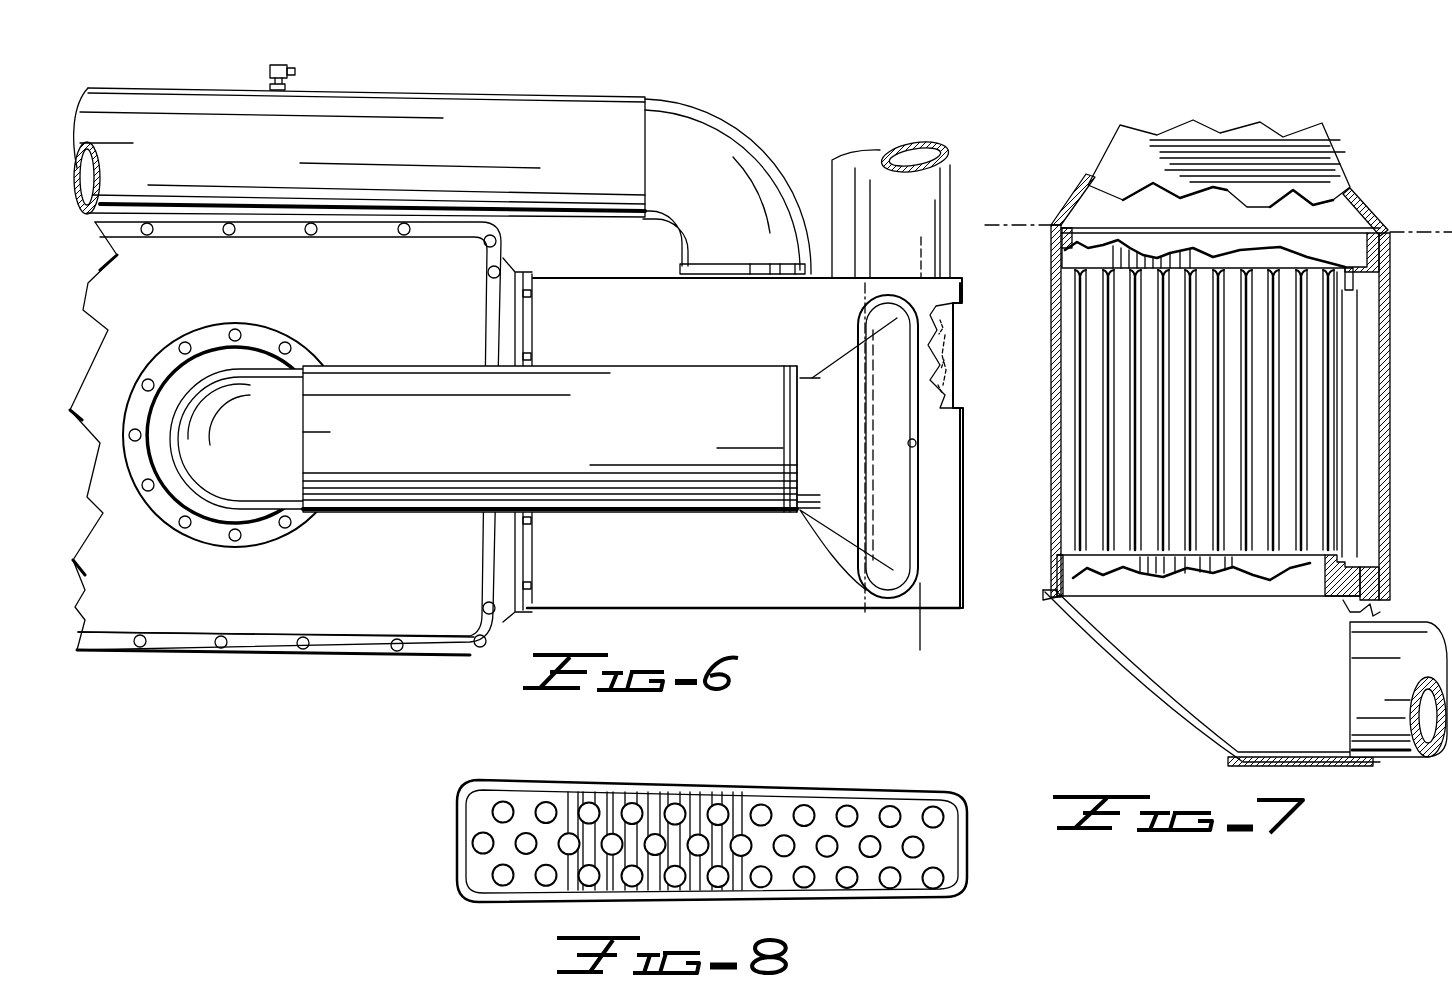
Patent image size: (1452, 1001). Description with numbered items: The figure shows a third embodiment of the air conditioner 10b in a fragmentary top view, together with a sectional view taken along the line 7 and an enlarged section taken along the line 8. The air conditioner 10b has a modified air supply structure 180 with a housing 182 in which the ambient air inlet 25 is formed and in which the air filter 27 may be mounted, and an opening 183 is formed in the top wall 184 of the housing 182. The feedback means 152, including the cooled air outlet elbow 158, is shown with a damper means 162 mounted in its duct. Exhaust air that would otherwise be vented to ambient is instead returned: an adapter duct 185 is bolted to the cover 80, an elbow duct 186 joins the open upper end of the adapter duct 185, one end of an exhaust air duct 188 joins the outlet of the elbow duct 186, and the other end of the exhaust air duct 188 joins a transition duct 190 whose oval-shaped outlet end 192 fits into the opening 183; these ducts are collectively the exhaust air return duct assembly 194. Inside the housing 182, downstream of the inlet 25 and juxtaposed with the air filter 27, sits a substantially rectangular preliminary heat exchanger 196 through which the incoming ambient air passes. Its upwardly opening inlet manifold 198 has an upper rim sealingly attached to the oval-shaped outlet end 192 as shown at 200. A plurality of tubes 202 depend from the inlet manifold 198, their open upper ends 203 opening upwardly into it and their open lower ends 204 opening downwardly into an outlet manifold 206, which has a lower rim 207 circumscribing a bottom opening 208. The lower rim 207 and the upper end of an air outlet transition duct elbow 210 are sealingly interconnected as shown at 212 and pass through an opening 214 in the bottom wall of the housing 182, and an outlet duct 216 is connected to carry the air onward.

In FIG. 6, the air conditioner 10b is at (348, 656).
In FIG. 6, the cover 80 is at (250, 625).
In FIG. 6, the feedback means 152 is at (611, 98).
In FIG. 6, the damper means 162 is at (296, 86).
In FIG. 6, the cooled air outlet elbow 158 is at (757, 142).
In FIG. 6, the outlet duct 216 is at (862, 157).
In FIG. 7, the outlet duct 216 is at (1378, 766).
In FIG. 6, the top wall 184 is at (615, 277).
In FIG. 6, the adapter duct 185 is at (270, 357).
In FIG. 6, the elbow duct 186 is at (267, 500).
In FIG. 6, the exhaust air duct 188 is at (656, 378).
In FIG. 6, the exhaust air return duct assembly 194 is at (770, 364).
In FIG. 6, the transition duct 190 is at (822, 530).
In FIG. 7, the transition duct 190 is at (1098, 165).
In FIG. 6, the oval-shaped outlet end 192 is at (918, 492).
In FIG. 7, the oval-shaped outlet end 192 is at (1370, 205).
In FIG. 6, the opening 183 is at (916, 442).
In FIG. 7, the opening 183 is at (1052, 222).
In FIG. 6, the housing 182 is at (713, 593).
In FIG. 7, the housing 182 is at (1045, 560).
In FIG. 6, the air supply structure 180 is at (866, 609).
In FIG. 6, the ambient air inlet 25 is at (955, 333).
In FIG. 6, the air filter 27 is at (955, 362).
In FIG. 6, the section line 7— 7 is at (922, 265).
In FIG. 7, the section line 8— 8 is at (1427, 231).
In FIG. 7, the sealing attachment 200 is at (1390, 234).
In FIG. 7, the inlet manifold 198 is at (1073, 258).
In FIG. 8, the inlet manifold 198 is at (862, 781).
In FIG. 7, the open upper ends 203 is at (1349, 268).
In FIG. 8, the open upper ends 203 is at (805, 805).
In FIG. 7, the tubes 202 is at (1320, 428).
In FIG. 7, the preliminary heat exchanger 196 is at (1360, 371).
In FIG. 7, the outlet manifold 206 is at (1228, 585).
In FIG. 7, the bottom opening 208 is at (1118, 585).
In FIG. 7, the open lower ends 204 is at (1335, 587).
In FIG. 7, the opening 214 is at (1380, 612).
In FIG. 7, the sealing interconnection 212 is at (1043, 590).
In FIG. 7, the air outlet transition duct elbow 210 is at (1137, 687).
In FIG. 7, the lower rim 207 is at (1093, 640).